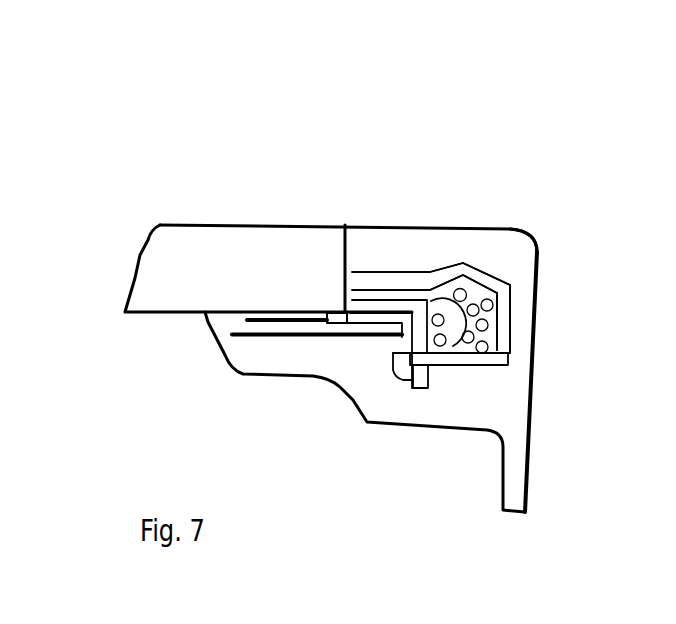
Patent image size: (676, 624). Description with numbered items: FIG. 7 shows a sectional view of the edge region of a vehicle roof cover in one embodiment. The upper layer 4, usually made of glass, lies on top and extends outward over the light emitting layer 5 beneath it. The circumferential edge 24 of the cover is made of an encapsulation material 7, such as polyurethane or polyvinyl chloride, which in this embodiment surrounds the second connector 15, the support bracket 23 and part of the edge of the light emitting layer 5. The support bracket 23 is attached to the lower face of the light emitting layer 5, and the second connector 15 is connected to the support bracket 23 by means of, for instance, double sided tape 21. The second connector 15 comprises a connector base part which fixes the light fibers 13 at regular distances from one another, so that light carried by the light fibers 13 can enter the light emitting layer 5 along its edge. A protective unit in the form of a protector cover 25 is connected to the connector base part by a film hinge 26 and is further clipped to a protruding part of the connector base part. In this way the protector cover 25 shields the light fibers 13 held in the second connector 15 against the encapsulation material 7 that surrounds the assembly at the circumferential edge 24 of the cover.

The upper layer 4 is at (222, 243).
The light emitting layer 5 is at (290, 245).
The second connector 15 is at (377, 280).
The encapsulation material 7 is at (422, 245).
The film hinge 26 is at (465, 263).
The circumferential edge 24 is at (520, 255).
The protector cover 25 is at (512, 293).
The light fibers 13 is at (495, 312).
The double sided tape 21 is at (273, 317).
The support bracket 23 is at (307, 328).